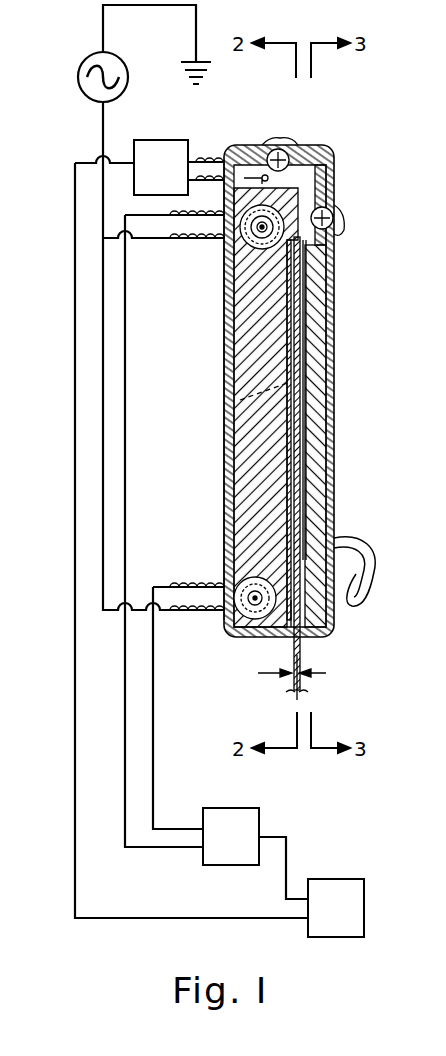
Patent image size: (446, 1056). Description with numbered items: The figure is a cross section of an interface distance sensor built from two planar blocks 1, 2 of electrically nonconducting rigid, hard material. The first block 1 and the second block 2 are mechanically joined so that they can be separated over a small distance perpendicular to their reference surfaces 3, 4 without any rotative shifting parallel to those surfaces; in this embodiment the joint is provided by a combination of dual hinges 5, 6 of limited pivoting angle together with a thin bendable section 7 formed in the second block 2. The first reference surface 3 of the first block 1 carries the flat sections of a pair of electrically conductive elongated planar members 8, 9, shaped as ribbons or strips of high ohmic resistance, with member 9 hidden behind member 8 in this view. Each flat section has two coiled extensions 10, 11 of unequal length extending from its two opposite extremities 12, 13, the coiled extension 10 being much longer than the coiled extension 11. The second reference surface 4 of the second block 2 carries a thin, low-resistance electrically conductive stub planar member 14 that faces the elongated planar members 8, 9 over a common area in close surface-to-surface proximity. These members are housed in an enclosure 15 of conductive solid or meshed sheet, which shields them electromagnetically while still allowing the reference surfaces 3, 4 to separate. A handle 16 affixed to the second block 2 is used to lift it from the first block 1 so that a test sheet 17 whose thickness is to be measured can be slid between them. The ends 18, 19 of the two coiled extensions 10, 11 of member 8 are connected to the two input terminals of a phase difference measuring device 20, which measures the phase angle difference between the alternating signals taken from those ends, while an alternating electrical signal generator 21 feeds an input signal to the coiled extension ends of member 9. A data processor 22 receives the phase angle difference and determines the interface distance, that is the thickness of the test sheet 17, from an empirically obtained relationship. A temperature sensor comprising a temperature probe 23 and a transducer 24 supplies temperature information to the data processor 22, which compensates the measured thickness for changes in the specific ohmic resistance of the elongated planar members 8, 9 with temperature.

The first block 1 is at (253, 433).
The second block 2 is at (320, 371).
The first reference surface 3 is at (278, 638).
The second reference surface 4 is at (296, 605).
The dual hinge 5 is at (290, 148).
The dual hinge 6 is at (336, 190).
The thin bendable section 7 is at (340, 236).
The electrically conductive elongated planar member 8 is at (286, 350).
The electrically conductive elongated planar member 9 is at (238, 402).
The coiled extension 10 is at (228, 248).
The coiled extension 11 is at (243, 586).
The extremity 12 is at (268, 252).
The extremity 13 is at (250, 572).
The electrically conductive stub planar member 14 is at (310, 331).
The enclosure 15 is at (334, 432).
The handle 16 is at (376, 568).
The test sheet 17 is at (300, 660).
The end 18 is at (252, 262).
The end 19 is at (232, 608).
The phase difference measuring device 20 is at (259, 822).
The alternating electrical signal generator 21 is at (128, 86).
The data processor 22 is at (330, 879).
The temperature probe 23 is at (256, 176).
The transducer 24 is at (180, 138).